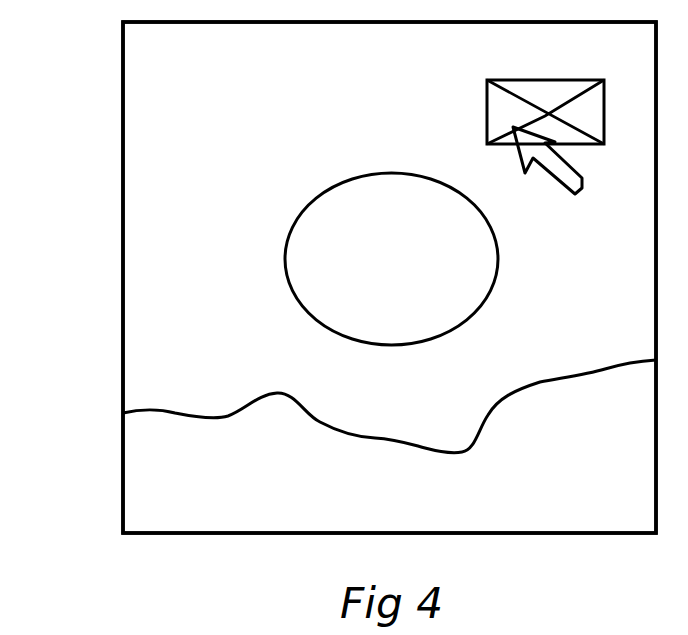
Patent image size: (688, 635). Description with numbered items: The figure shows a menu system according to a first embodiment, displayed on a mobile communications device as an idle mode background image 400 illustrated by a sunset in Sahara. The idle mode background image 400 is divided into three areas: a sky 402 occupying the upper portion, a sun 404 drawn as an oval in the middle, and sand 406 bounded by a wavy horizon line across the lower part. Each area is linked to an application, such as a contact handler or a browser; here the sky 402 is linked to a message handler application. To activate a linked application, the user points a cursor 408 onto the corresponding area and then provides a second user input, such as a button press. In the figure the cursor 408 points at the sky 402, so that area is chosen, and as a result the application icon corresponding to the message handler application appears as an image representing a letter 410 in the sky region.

The idle mode background image 400 is at (113, 162).
The sky 402 is at (178, 55).
The sun 404 is at (363, 224).
The sand 406 is at (173, 448).
The cursor 408 is at (566, 186).
The letter 410 is at (487, 81).